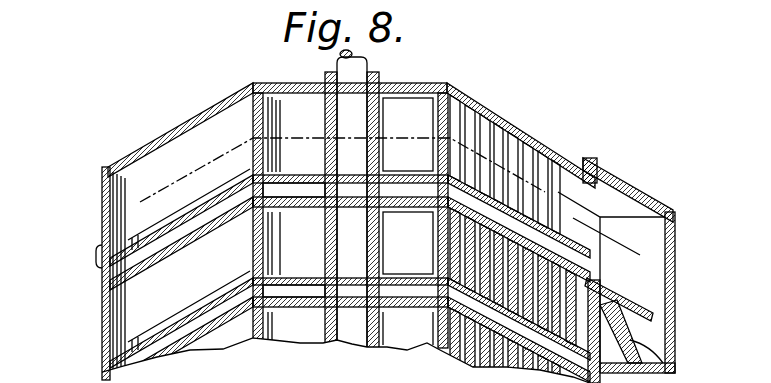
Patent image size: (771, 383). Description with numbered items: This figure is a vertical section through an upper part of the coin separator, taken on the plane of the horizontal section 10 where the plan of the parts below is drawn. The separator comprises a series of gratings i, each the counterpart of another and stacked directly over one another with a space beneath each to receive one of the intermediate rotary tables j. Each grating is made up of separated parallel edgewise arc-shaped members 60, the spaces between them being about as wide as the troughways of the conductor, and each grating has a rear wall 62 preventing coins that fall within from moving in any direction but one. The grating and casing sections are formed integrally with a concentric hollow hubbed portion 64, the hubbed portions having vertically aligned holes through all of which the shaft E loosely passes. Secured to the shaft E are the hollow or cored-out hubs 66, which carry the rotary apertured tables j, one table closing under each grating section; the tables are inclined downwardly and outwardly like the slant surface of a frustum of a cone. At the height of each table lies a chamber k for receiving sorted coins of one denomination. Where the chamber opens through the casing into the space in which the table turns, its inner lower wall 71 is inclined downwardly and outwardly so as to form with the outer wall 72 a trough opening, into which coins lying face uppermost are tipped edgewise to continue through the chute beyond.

The section line 10 is at (83, 245).
The arc-shaped members 60 is at (477, 138).
The rear wall 62 is at (192, 288).
The hubbed portion 64 is at (300, 205).
The hubs 66 is at (283, 253).
The inner lower wall 71 is at (638, 337).
The outer wall 72 is at (670, 317).
The shaft E is at (352, 201).
The gratings i is at (517, 157).
The rotary tables j is at (203, 212).
The chamber k is at (647, 237).